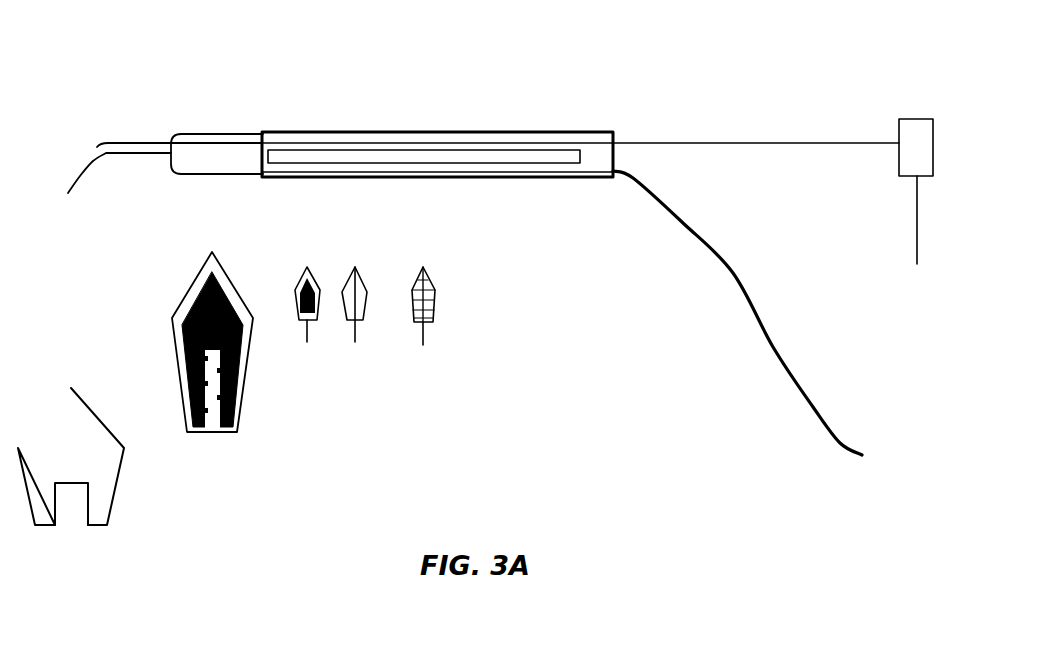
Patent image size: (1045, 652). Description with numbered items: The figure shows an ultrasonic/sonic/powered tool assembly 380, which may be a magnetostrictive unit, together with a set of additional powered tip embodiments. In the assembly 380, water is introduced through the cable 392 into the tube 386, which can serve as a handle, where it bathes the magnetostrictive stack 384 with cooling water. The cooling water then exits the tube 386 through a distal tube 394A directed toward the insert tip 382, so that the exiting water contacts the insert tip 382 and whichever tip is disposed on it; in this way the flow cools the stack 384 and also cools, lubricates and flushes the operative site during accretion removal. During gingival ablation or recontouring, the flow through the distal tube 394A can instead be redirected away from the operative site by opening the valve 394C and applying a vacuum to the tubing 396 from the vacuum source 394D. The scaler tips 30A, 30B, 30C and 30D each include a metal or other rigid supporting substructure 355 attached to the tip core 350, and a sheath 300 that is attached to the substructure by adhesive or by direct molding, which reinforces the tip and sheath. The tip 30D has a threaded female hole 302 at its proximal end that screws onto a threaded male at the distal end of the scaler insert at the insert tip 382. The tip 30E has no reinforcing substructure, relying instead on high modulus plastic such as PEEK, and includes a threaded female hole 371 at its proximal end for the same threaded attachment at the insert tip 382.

The ultrasonic/sonic/powered tool assembly 380 is at (545, 112).
The insert tip 382 is at (72, 187).
The distal tube 394A is at (117, 140).
The magnetostrictive stack 384 is at (540, 160).
The tube 386 is at (590, 178).
The tubing 396 is at (786, 144).
The valve 394C is at (903, 118).
The vacuum source 394D is at (917, 228).
The cable 392 is at (740, 290).
The tip 30D is at (260, 395).
The sheath 300 is at (190, 295).
The supporting substructure 355 is at (182, 328).
The threaded female hole 302 is at (212, 430).
The tip 30A is at (310, 342).
The tip 30B is at (365, 345).
The tip 30C is at (433, 348).
The tip core 350 is at (424, 330).
The tip 30E is at (40, 527).
The threaded female hole 371 is at (72, 508).